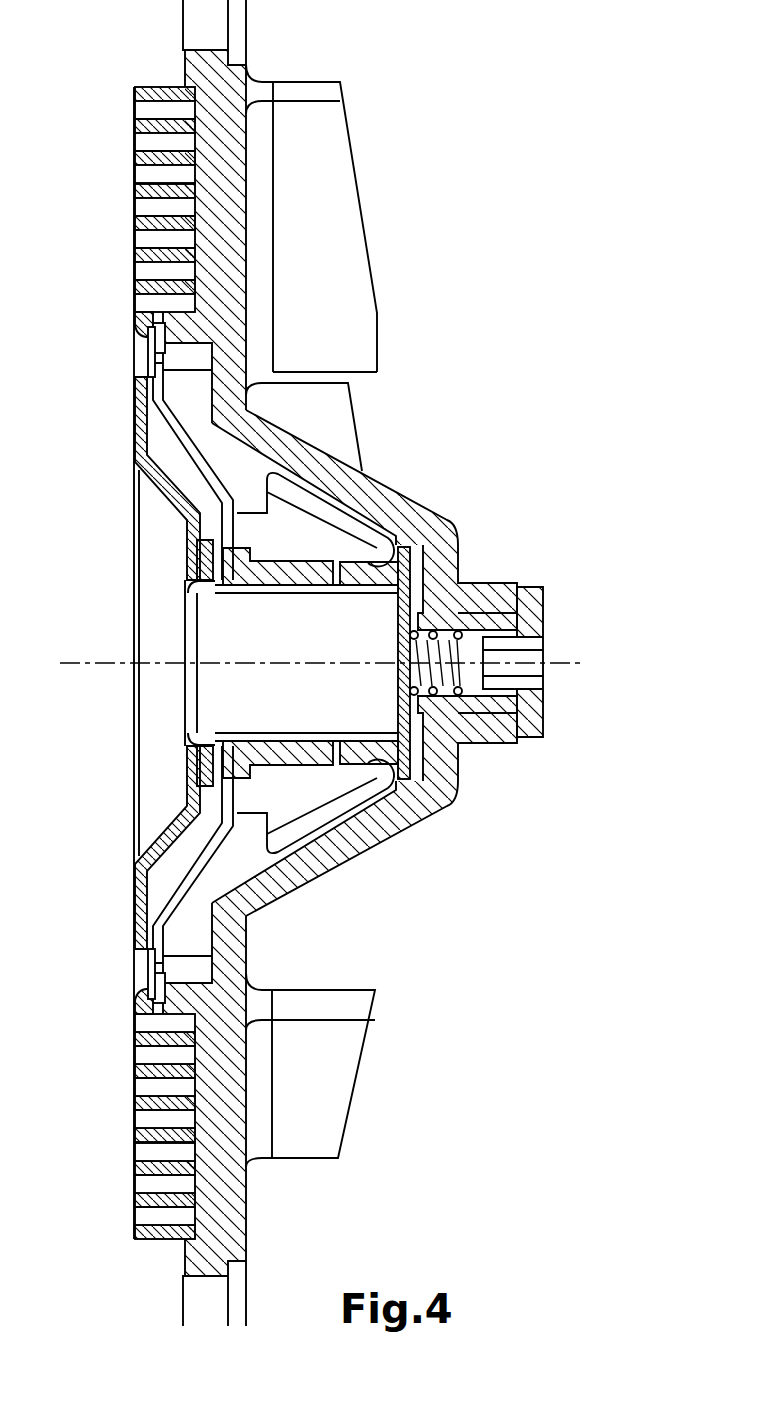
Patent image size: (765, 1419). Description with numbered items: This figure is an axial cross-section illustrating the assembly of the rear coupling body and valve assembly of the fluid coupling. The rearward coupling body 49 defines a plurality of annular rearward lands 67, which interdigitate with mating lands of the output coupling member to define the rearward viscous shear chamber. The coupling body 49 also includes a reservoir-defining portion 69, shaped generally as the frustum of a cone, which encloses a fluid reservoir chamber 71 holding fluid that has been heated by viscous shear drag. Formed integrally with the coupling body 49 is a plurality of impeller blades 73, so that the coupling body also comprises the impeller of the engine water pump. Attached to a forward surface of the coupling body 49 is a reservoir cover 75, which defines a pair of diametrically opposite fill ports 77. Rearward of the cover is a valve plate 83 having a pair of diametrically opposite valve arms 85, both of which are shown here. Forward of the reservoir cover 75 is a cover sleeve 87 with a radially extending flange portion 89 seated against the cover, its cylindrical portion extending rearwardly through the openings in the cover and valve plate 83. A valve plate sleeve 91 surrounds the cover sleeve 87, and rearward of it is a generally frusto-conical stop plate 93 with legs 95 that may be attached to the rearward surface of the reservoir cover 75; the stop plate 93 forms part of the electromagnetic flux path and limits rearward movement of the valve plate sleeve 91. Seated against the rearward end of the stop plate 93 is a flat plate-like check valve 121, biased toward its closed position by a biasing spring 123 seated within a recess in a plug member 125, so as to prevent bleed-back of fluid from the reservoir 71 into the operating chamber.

The rearward coupling body 49 is at (220, 1227).
The annular rearward lands 67 is at (150, 232).
The reservoir-defining portion 69 is at (443, 775).
The fluid reservoir chamber 71 is at (312, 775).
The impeller blades 73 is at (330, 228).
The reservoir cover 75 is at (160, 490).
The fill ports 77 is at (143, 355).
The valve plate 83 is at (238, 514).
The valve arms 85 is at (178, 372).
The cover sleeve 87 is at (300, 738).
The flange portion 89 is at (185, 565).
The valve plate sleeve 91 is at (310, 571).
The stop plate 93 is at (382, 530).
The legs 95 is at (162, 442).
The check valve 121 is at (410, 560).
The biasing spring 123 is at (433, 638).
The plug member 125 is at (535, 703).